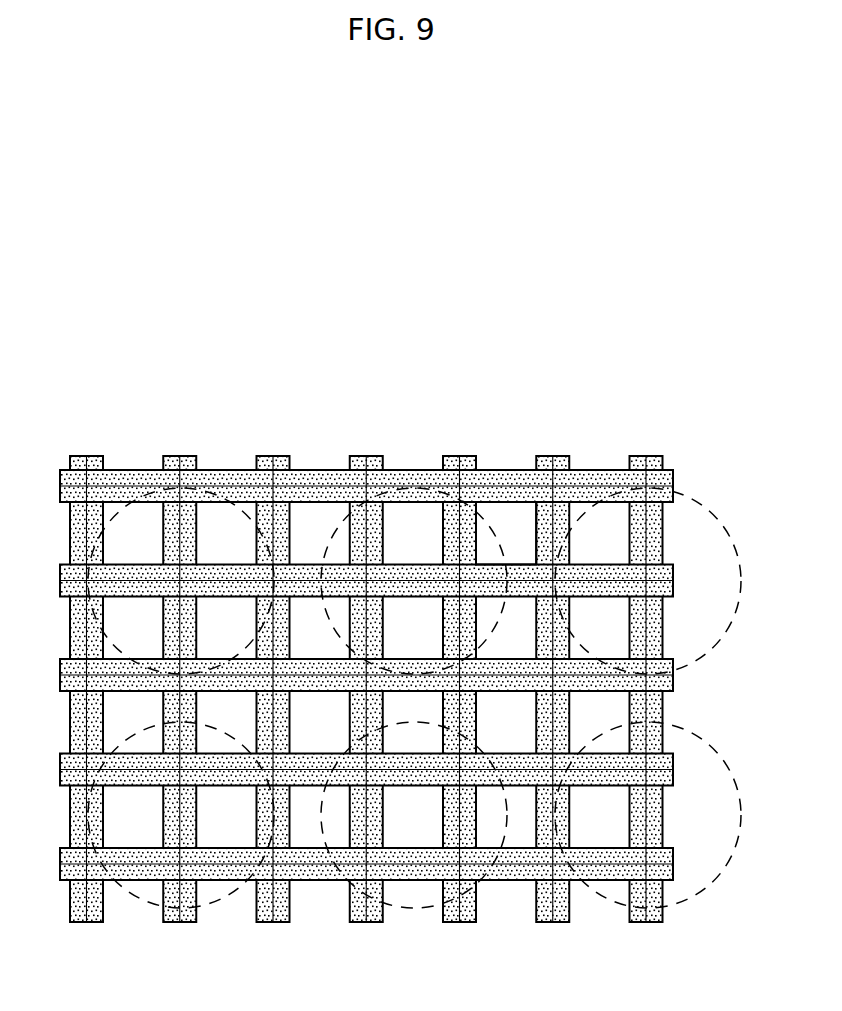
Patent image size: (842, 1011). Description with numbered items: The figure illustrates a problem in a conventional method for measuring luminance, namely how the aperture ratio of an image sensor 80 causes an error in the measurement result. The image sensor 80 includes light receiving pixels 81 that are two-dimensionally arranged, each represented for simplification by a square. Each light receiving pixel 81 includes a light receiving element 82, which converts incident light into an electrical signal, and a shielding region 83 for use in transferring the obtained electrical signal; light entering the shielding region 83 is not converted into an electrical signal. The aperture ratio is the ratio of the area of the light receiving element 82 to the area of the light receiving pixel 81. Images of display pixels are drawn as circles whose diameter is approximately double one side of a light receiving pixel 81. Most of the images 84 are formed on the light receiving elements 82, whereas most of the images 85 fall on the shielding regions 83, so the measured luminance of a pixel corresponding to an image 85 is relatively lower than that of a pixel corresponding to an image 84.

The image sensor 80 is at (697, 457).
The light receiving pixel 81 is at (538, 489).
The light receiving element 82 is at (510, 527).
The shielding region 83 is at (493, 488).
The image of a pixel 84 is at (248, 513).
The image of a pixel 85 is at (411, 908).